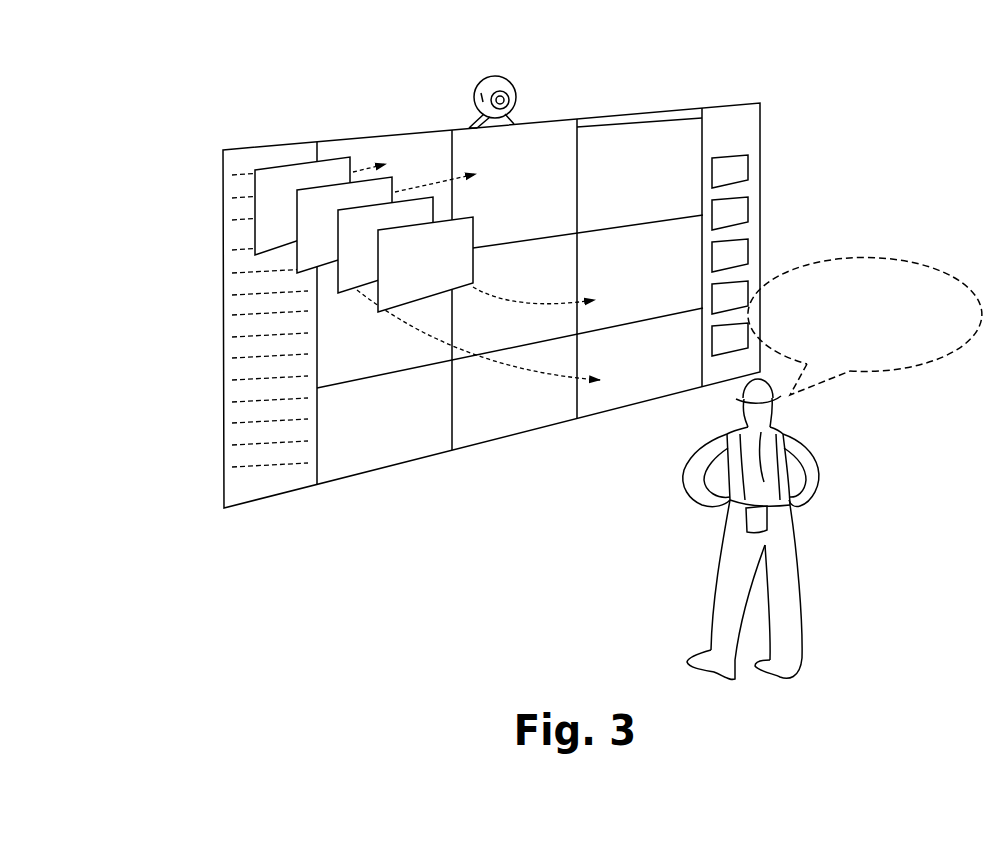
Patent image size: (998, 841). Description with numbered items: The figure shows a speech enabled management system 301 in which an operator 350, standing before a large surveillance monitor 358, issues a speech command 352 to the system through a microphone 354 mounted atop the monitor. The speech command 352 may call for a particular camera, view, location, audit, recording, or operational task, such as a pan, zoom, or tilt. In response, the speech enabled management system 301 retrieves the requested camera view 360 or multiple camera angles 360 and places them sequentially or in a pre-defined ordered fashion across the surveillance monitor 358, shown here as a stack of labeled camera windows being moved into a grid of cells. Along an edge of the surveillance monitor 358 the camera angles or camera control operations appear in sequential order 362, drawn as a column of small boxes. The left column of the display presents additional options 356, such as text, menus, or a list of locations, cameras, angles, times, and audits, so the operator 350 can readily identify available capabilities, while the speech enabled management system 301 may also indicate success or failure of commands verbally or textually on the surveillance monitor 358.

The speech enabled management system 301 is at (208, 70).
The operator 350 is at (820, 458).
The speech command 352 is at (906, 270).
The microphone 354 is at (500, 78).
The additional options 356 is at (231, 176).
The surveillance monitor 358 is at (383, 470).
The camera view 360 is at (474, 217).
The sequential order 362 is at (746, 209).